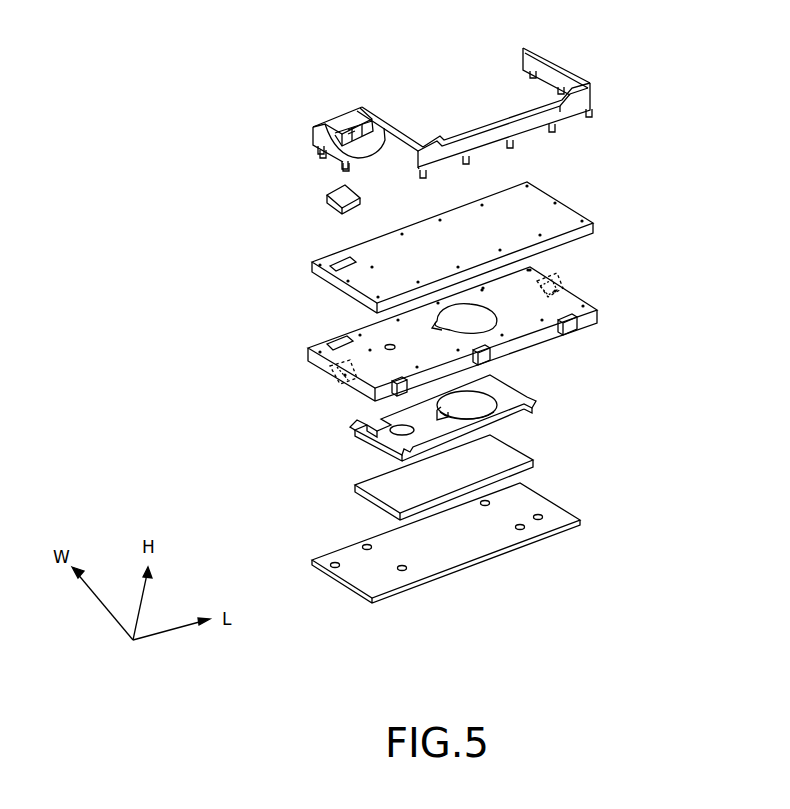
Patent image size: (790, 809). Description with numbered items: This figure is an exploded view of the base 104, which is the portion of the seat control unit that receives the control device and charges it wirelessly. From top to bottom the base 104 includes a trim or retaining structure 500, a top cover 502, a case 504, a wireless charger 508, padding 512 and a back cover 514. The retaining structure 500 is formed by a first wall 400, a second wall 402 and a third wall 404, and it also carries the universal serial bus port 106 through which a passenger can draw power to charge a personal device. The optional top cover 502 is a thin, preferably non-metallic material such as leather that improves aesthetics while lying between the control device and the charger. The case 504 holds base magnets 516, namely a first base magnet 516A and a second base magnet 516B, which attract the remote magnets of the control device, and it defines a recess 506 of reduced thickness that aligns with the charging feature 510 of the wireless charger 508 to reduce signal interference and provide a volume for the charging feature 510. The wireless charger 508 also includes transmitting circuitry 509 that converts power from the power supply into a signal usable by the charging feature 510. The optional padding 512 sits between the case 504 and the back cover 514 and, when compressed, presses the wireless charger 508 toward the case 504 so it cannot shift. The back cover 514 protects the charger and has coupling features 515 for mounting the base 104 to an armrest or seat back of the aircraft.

The base 104 is at (243, 143).
The universal serial bus (USB) port 106 is at (320, 127).
The retaining structure 500 is at (360, 108).
The second wall 402 is at (531, 128).
The third wall 404 is at (572, 70).
The first wall 400 is at (410, 152).
The top cover 502 is at (362, 252).
The case 504 is at (308, 350).
The recess 506 is at (473, 325).
The base magnets 516 is at (557, 273).
The first base magnet 516A is at (577, 293).
The second base magnet 516B is at (308, 372).
The wireless charger 508 is at (520, 395).
The transmitting circuitry 509 is at (362, 428).
The charging feature 510 is at (485, 404).
The padding 512 is at (527, 458).
The back cover 514 is at (563, 517).
The coupling features 515 is at (410, 567).